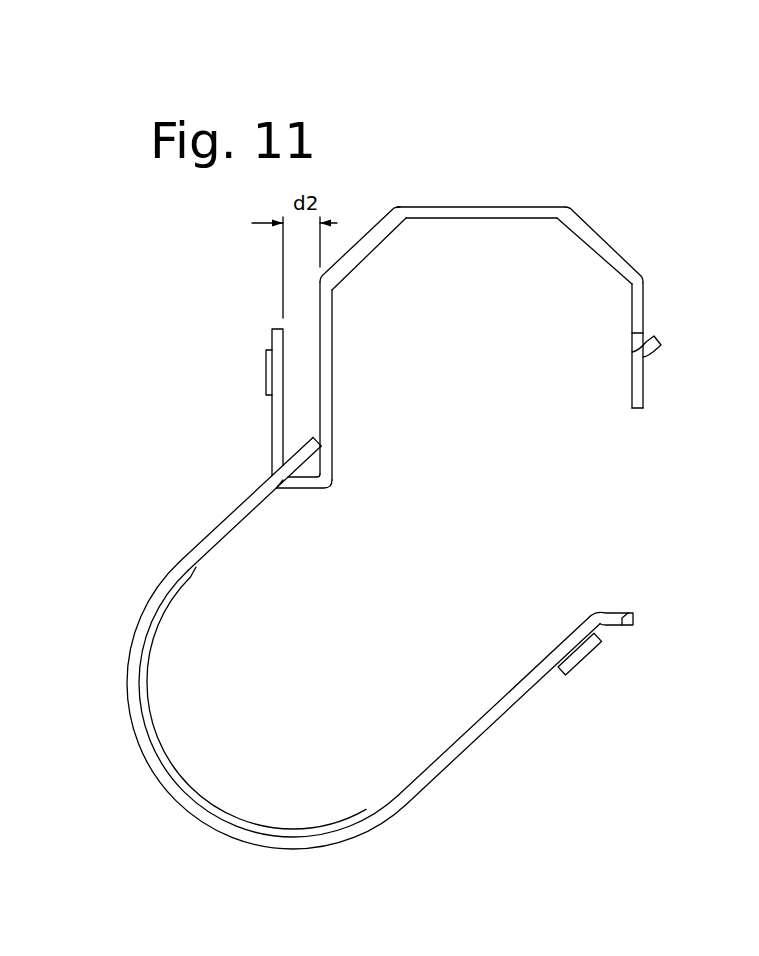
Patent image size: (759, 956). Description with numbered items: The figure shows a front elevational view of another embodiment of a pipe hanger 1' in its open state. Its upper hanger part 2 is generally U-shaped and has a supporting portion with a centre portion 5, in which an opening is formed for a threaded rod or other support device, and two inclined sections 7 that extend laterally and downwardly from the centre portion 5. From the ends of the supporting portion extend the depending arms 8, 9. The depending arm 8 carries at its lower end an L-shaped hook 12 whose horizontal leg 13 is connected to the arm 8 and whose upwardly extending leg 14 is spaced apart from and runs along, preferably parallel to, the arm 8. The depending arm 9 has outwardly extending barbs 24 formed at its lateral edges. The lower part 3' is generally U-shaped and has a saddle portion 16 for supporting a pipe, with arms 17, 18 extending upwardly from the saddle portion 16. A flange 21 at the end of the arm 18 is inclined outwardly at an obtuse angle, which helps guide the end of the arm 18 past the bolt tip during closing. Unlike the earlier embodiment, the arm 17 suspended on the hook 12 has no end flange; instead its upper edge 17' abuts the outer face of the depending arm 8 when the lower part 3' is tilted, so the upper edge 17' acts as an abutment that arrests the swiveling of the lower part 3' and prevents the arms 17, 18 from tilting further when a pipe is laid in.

The pipe hanger 1' is at (430, 330).
The upper hanger part 2 is at (572, 190).
The centre portion 5 is at (485, 212).
The inclined sections 7 is at (368, 234).
The depending arm 8 is at (327, 337).
The depending arm 9 is at (637, 318).
The hook 12 is at (258, 472).
The horizontal leg 13 is at (310, 483).
The upwardly extending leg 14 is at (280, 435).
The saddle portion 16 is at (195, 812).
The arm 17 is at (250, 503).
The upper edge 17' is at (358, 436).
The arm 18 is at (458, 748).
The flange 21 is at (630, 613).
The barbs 24 is at (662, 352).
The lower part 3' is at (399, 656).